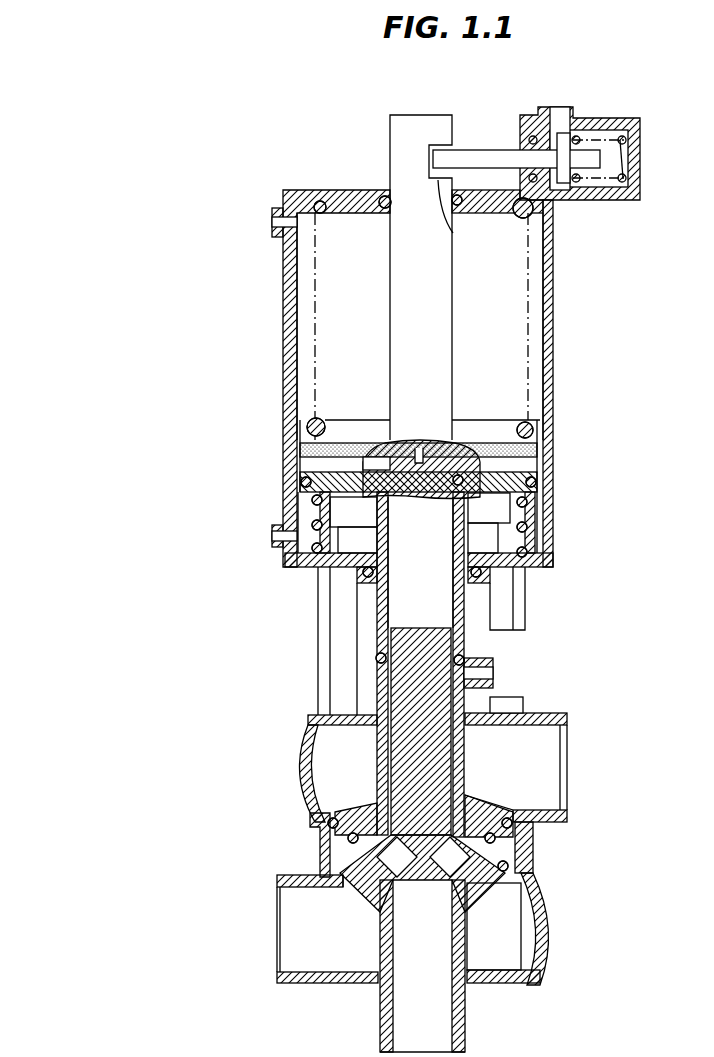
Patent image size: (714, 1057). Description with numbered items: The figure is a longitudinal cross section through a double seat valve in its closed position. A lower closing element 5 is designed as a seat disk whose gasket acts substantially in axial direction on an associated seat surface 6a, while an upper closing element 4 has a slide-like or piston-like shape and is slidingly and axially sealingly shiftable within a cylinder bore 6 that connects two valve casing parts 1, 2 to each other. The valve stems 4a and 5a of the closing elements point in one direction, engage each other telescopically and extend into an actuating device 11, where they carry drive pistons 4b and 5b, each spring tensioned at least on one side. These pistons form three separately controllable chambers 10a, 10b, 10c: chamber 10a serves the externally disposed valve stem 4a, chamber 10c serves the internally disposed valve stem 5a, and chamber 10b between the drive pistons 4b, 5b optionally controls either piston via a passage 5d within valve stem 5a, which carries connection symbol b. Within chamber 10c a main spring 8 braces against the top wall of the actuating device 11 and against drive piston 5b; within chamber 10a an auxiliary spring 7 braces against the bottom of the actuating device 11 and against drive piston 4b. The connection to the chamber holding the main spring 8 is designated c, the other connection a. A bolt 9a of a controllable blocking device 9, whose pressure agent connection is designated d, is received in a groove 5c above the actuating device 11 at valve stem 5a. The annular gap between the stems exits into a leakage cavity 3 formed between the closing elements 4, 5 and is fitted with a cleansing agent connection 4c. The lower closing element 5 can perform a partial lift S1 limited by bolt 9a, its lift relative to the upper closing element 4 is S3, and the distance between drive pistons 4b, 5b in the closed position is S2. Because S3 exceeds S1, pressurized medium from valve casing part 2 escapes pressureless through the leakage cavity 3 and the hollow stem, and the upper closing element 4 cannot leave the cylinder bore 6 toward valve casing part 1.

The actuating device 11 is at (262, 172).
The connection symbol for passage b is at (418, 114).
The controllable blocking device 9 is at (655, 132).
The bolt 9a is at (475, 158).
The pressure agent connection d is at (557, 107).
The axial partial lift movement S1 is at (390, 178).
The fluid connection c is at (268, 218).
The groove 5c is at (458, 216).
The main spring 8 is at (312, 278).
The chamber 10c is at (335, 352).
The chamber 10b is at (342, 472).
The drive piston 5b is at (310, 442).
The passage 5d is at (422, 455).
The distance between drive pistons S2 is at (300, 471).
The drive piston 4b is at (320, 492).
The fluid connection a is at (272, 536).
The auxiliary spring 7 is at (317, 557).
The chamber 10a is at (347, 586).
The cleansing agent connection 4c is at (485, 672).
The valve stem 5a is at (407, 735).
The valve stem 4a is at (380, 762).
The upper closing element 4 is at (372, 800).
The valve casing part 1 is at (523, 761).
The cylinder bore 6 is at (322, 828).
The relative partial lift movement S3 is at (330, 852).
The seat surface 6a is at (335, 878).
The valve casing part 2 is at (320, 938).
The lower closing element 5 is at (377, 893).
The leakage cavity 3 is at (505, 850).